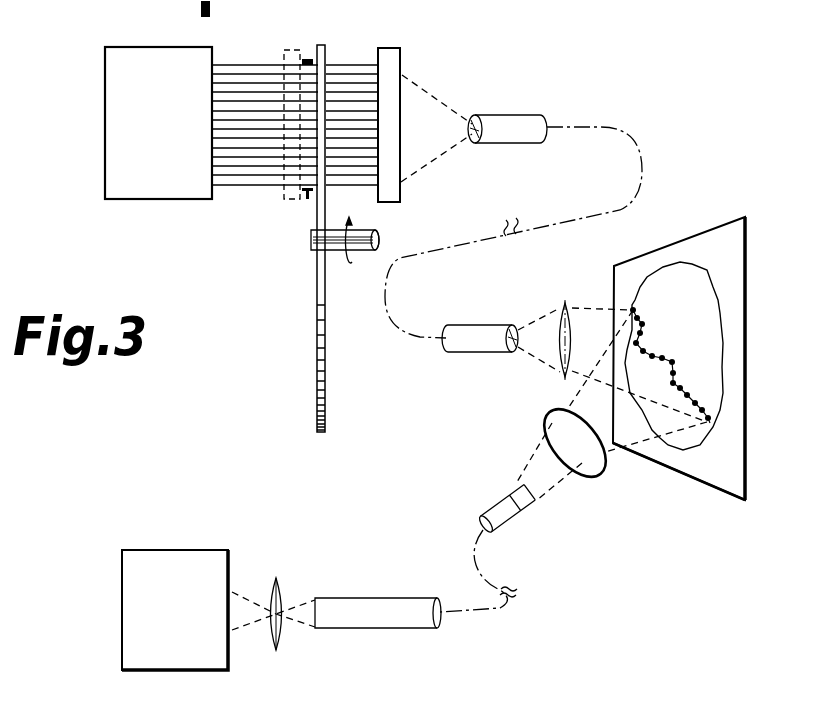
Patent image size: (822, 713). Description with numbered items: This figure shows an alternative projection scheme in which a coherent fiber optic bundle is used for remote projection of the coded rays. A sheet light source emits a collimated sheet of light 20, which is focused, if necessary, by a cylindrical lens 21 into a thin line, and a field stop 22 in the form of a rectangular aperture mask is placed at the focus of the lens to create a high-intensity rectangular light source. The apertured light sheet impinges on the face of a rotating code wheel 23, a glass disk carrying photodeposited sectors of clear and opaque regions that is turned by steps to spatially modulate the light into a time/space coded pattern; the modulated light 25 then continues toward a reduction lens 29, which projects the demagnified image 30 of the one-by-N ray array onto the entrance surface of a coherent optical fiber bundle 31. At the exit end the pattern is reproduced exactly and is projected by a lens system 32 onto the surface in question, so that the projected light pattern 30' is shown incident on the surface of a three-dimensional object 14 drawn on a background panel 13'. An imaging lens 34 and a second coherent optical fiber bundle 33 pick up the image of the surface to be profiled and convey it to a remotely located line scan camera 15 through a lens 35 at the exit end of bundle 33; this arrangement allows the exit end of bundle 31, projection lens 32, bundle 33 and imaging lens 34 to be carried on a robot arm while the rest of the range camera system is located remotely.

The object being inspected (image of object) 13' is at (674, 389).
The 3-D object 14 is at (692, 273).
The line scan camera 15 is at (200, 550).
The collimated sheet of light 20 is at (258, 65).
The cylindrical lens 21 is at (284, 197).
The field stop 22 is at (305, 58).
The rotating code wheel 23 is at (317, 378).
The light sheet portion passing slit 25 is at (354, 62).
The reduction lens 29 is at (396, 48).
The demagnified image 30 is at (471, 239).
The projected light pattern 30' is at (645, 365).
The coherent optical fiber bundle 31 is at (516, 115).
The lens system 32 is at (565, 302).
The coherent optical fiber bundle 33 is at (392, 598).
The imaging lens 34 is at (553, 428).
The lens 35 is at (285, 588).